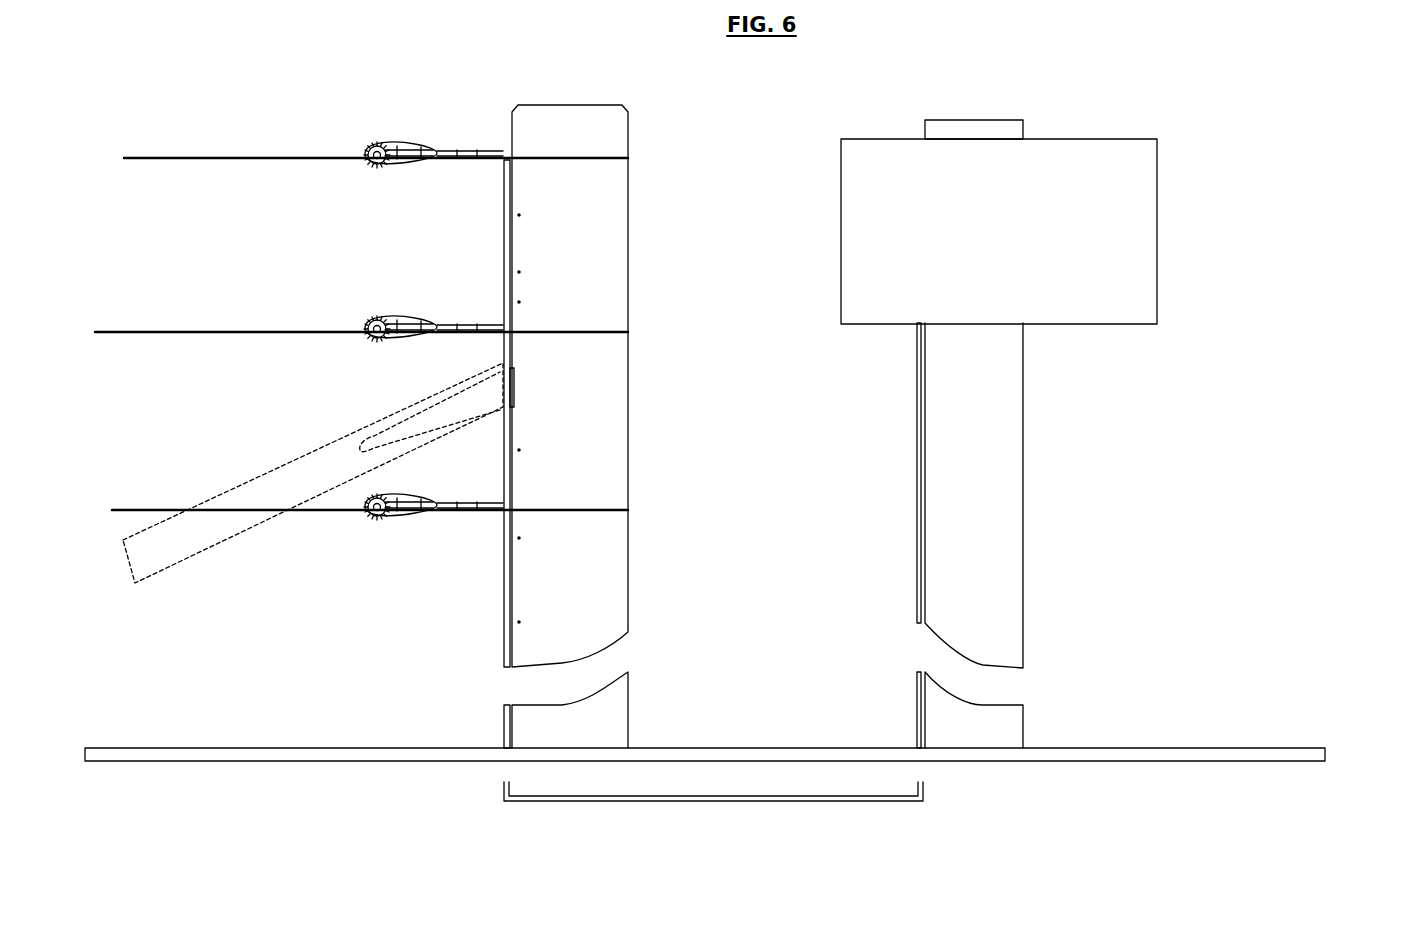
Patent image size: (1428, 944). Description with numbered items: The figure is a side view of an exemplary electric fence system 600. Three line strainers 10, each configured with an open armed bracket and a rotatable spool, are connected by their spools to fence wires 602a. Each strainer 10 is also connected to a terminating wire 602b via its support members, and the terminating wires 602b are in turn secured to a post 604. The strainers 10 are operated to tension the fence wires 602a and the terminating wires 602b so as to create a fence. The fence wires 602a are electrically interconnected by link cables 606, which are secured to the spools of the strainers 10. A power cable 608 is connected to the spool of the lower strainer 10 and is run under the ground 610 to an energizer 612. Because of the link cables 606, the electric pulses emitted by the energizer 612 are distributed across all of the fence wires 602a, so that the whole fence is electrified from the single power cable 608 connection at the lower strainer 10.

The electric fence system 600 is at (1270, 169).
The fence wires 602a is at (139, 158).
The terminating wire 602b is at (602, 156).
The post 604 is at (628, 415).
The link cables 606 is at (501, 233).
The power cable 608 is at (696, 801).
The ground 610 is at (843, 748).
The energizer 612 is at (1092, 325).
The line strainer 10 is at (403, 143).